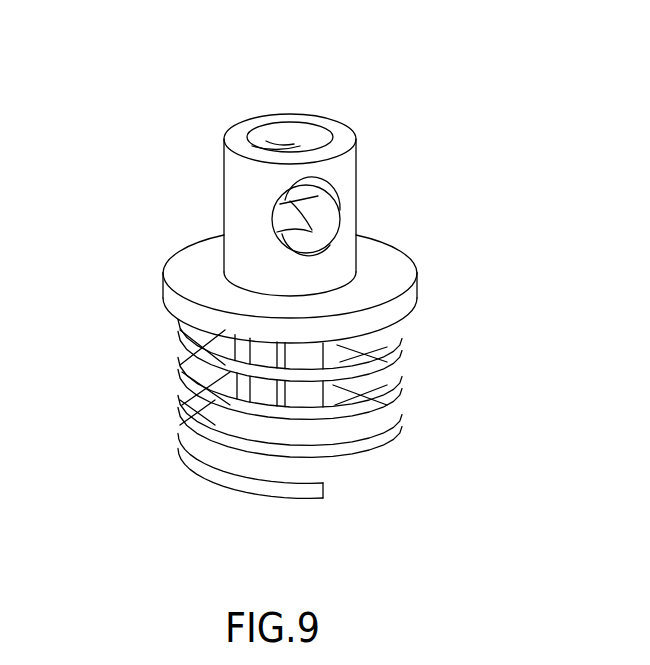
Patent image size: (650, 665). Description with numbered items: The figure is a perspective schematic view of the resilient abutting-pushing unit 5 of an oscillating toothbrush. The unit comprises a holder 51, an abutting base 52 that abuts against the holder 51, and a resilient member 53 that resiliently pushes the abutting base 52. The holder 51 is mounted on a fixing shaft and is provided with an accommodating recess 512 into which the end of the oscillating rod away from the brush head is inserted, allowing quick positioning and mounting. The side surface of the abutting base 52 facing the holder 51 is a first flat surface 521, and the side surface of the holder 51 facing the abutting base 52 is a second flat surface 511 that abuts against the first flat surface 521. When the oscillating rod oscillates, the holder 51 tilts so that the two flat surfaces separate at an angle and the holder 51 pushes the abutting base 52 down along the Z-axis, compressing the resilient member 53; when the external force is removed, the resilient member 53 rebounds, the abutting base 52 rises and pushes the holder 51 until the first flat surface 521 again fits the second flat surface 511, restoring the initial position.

The resilient abutting-pushing unit 5 is at (300, 45).
The holder 51 is at (245, 200).
The second flat surface 511 is at (405, 288).
The accommodating recess 512 is at (307, 143).
The abutting base 52 is at (175, 303).
The first flat surface 521 is at (372, 250).
The resilient member 53 is at (168, 385).